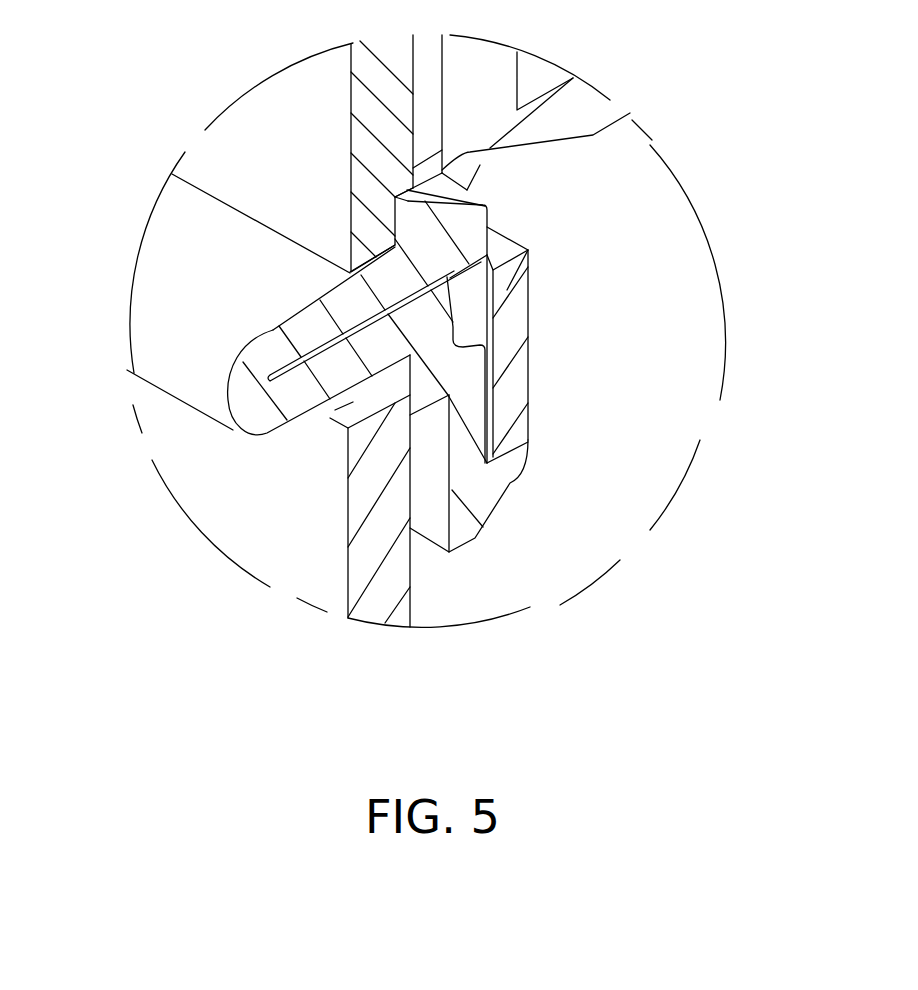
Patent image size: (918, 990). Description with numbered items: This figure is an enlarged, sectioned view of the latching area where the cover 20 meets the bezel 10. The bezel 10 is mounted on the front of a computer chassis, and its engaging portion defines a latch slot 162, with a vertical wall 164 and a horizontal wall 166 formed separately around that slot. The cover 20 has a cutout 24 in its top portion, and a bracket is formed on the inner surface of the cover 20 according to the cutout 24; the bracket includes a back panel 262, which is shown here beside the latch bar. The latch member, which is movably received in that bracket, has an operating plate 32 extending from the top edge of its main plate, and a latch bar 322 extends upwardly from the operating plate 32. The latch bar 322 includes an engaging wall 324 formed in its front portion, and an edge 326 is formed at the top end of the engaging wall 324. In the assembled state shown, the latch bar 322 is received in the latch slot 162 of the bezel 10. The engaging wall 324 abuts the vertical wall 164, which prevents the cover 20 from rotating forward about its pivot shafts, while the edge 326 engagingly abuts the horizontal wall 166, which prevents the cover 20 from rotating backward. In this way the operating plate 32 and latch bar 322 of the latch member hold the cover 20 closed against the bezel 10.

The bezel 10 is at (353, 72).
The latch slot 162 is at (480, 165).
The vertical wall 164 is at (397, 218).
The horizontal wall 166 is at (467, 190).
The edge 326 is at (397, 210).
The engaging wall 324 is at (395, 232).
The latch bar 322 is at (415, 225).
The operating plate 32 is at (312, 327).
The back panel 262 is at (513, 346).
The cover 20 is at (353, 538).
The cutout 24 is at (353, 405).